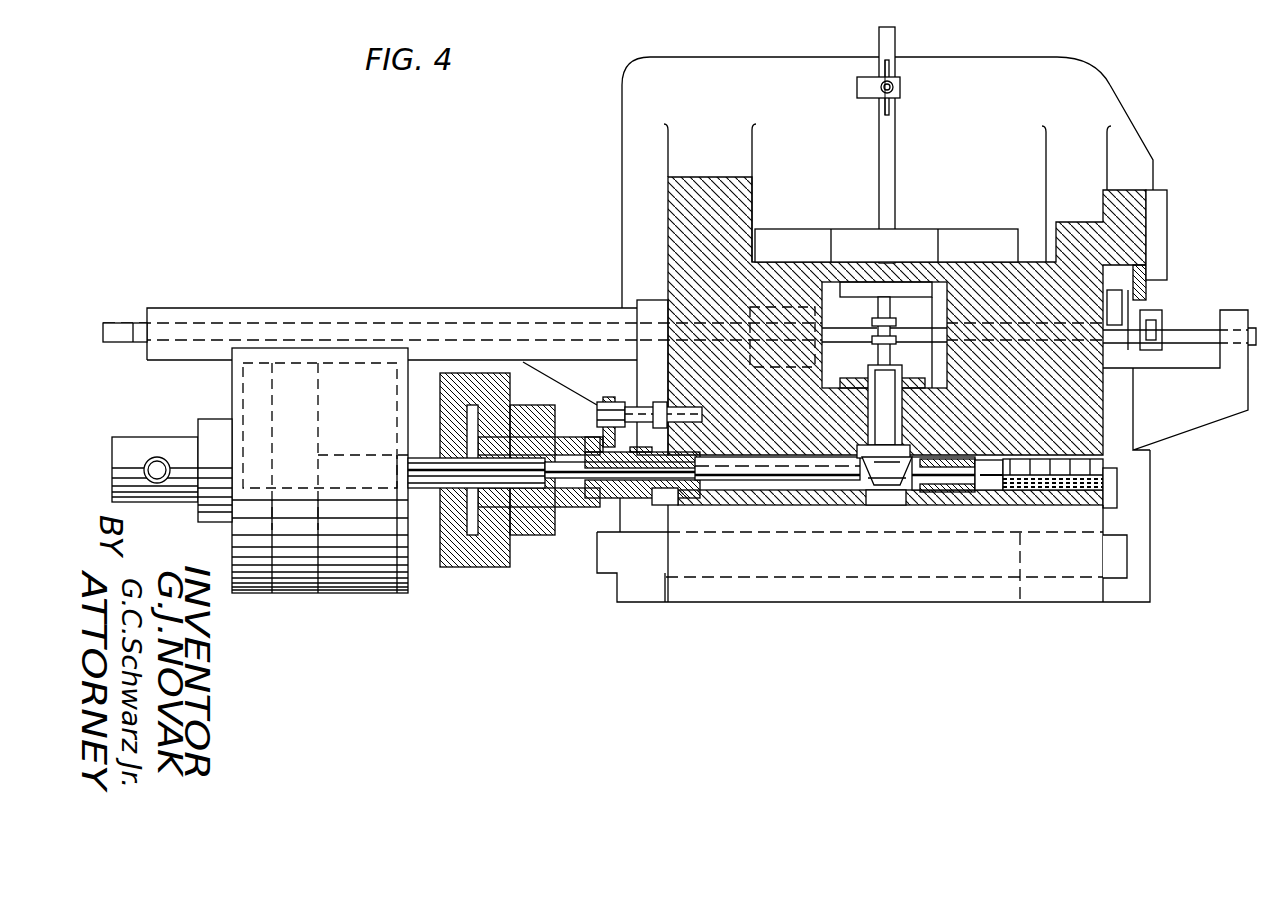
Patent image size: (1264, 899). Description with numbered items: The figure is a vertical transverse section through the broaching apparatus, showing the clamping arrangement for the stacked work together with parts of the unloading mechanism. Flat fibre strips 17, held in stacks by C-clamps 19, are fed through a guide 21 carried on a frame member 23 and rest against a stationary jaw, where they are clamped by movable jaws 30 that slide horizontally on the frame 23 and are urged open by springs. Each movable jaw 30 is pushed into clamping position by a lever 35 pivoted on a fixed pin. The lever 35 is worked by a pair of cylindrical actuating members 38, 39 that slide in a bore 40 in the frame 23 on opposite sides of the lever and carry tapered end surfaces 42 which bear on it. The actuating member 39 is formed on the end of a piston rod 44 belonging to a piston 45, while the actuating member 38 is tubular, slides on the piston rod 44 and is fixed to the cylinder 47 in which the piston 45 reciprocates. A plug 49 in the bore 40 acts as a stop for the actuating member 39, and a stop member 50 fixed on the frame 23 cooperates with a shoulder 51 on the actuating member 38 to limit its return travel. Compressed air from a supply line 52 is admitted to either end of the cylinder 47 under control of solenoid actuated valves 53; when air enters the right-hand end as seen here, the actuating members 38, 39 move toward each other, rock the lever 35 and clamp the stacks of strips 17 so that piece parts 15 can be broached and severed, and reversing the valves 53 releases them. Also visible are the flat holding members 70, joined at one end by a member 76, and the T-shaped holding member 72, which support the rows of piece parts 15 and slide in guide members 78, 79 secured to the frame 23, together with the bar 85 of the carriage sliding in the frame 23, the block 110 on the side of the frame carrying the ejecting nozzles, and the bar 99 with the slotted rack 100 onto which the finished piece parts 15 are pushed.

The piece parts 15 is at (1152, 352).
The flat strips 17 is at (895, 43).
The C-clamps 19 is at (858, 84).
The guide 21 is at (918, 242).
The frame member 23 is at (752, 428).
The movable jaws 30 is at (877, 356).
The levers 35 is at (886, 413).
The actuating member 38 is at (820, 478).
The actuating member 39 is at (958, 490).
The bore 40 is at (778, 485).
The tapered end surfaces 42 is at (883, 488).
The piston rod 44 is at (683, 505).
The piston 45 is at (318, 427).
The cylinder 47 is at (408, 588).
The plug 49 is at (1008, 492).
The stop member 50 is at (610, 398).
The shoulder 51 is at (622, 492).
The supply line 52 is at (158, 483).
The solenoid actuated valves 53 is at (160, 442).
The holding members 70 is at (843, 338).
The holding member 72 is at (911, 338).
The member 76 is at (115, 328).
The guide member 78 is at (496, 316).
The guide member 79 is at (1233, 322).
The bar 85 is at (1115, 570).
The bar 99 is at (1147, 283).
The rack 100 is at (1158, 330).
The block 110 is at (1113, 293).